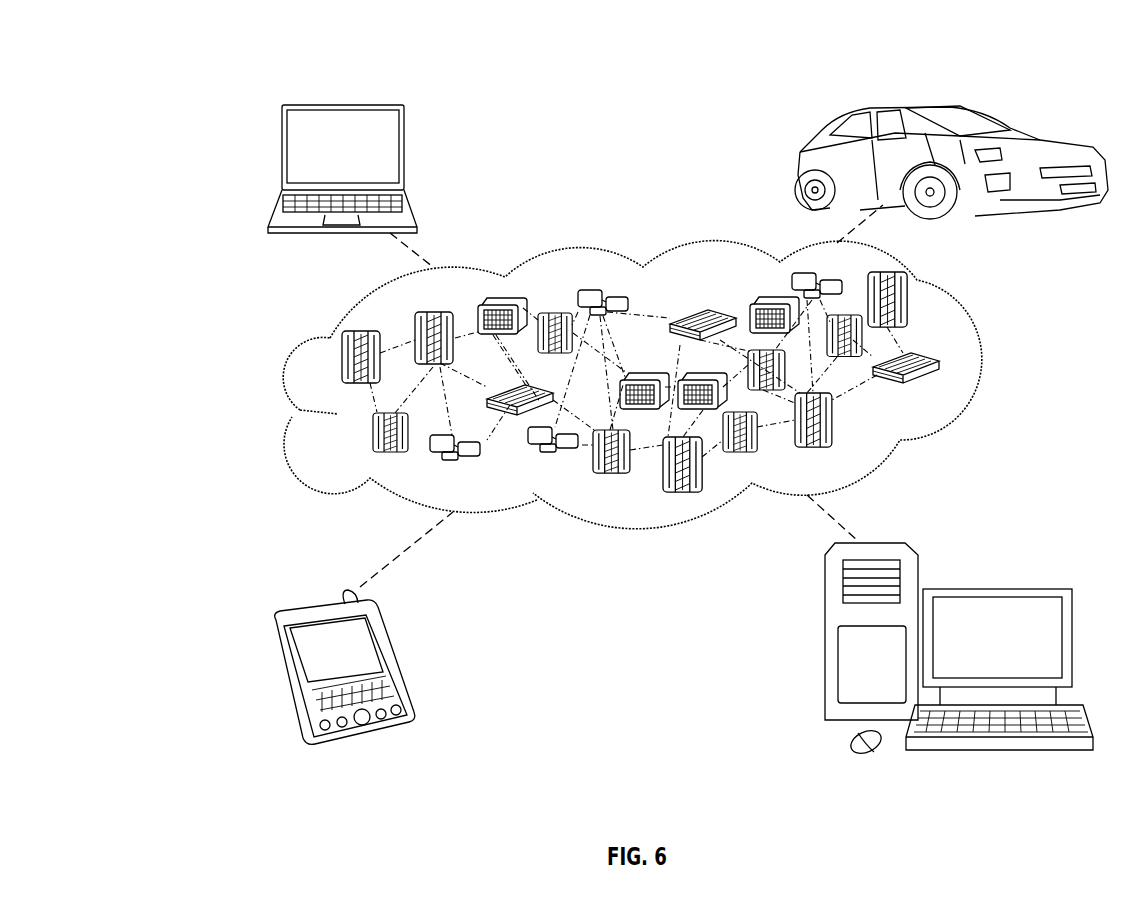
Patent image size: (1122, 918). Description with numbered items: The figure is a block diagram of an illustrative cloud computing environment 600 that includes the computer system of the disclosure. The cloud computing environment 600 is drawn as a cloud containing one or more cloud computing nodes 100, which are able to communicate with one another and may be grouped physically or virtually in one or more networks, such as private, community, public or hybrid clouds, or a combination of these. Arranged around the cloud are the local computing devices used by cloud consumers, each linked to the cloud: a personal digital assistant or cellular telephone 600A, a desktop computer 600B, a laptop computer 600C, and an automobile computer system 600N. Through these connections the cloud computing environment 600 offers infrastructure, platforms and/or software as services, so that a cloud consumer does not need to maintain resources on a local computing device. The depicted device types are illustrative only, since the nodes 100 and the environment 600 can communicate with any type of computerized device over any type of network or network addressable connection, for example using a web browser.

The cloud computing environment 600 is at (164, 48).
The cloud computing nodes 100 is at (942, 388).
The personal digital assistant or cellular telephone 600A is at (398, 658).
The desktop computer 600B is at (995, 587).
The laptop computer 600C is at (408, 156).
The automobile computer system 600N is at (800, 172).